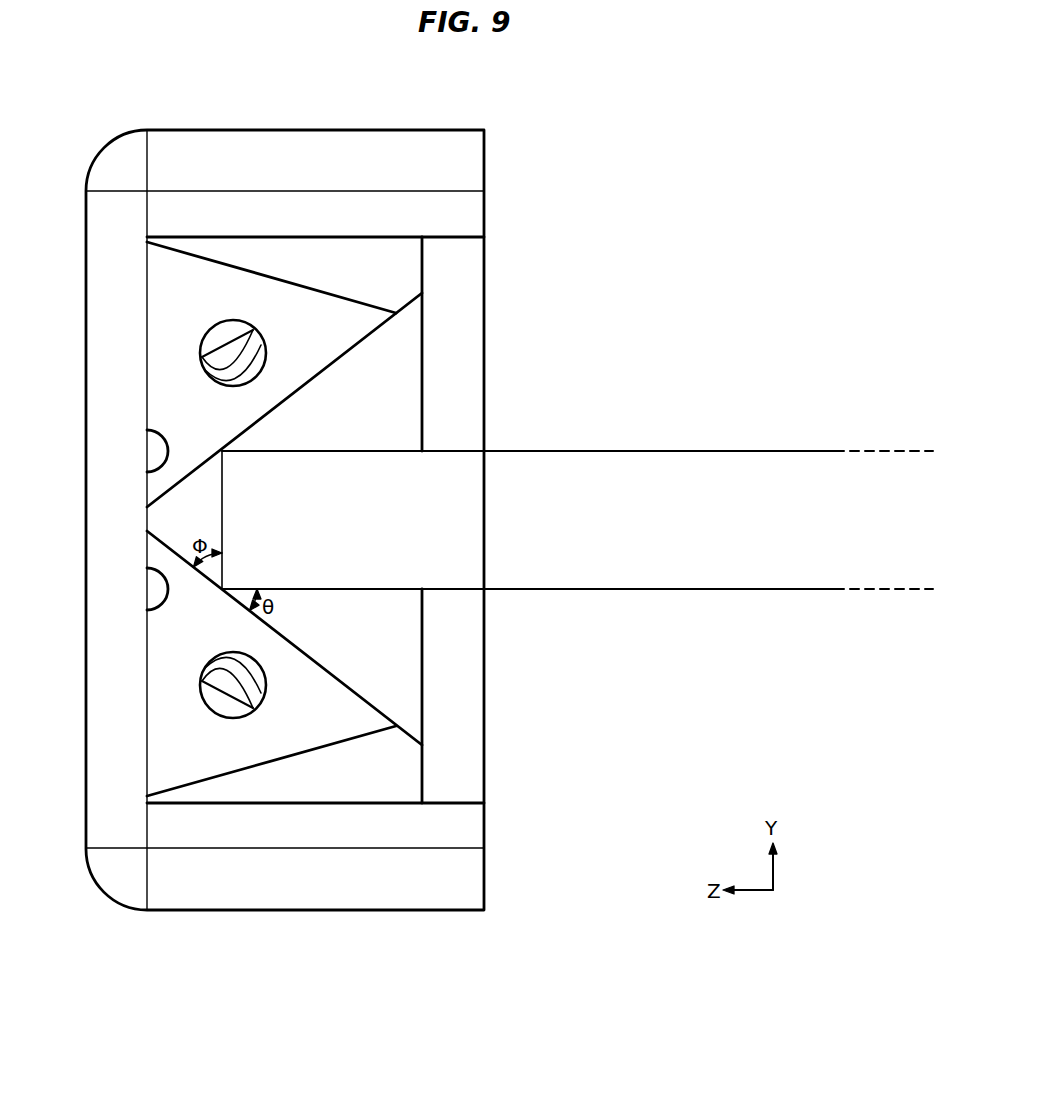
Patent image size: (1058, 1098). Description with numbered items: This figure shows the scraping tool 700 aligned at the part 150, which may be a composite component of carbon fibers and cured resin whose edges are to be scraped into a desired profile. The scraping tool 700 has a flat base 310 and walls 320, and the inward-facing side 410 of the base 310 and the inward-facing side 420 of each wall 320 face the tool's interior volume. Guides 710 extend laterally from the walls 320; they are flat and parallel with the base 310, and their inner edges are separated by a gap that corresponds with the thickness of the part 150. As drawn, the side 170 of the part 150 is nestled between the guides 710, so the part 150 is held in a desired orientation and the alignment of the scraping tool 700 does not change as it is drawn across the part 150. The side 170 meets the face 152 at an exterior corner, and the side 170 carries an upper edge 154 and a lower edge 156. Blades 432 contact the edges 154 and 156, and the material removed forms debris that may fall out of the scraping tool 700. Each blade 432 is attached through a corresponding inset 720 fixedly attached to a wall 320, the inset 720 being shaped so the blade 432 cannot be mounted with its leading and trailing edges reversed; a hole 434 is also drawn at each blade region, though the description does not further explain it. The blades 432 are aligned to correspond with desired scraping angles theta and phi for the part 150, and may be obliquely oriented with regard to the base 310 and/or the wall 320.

The part 150 is at (697, 448).
The face 152 is at (318, 446).
The upper edge 154 is at (226, 455).
The lower edge 156 is at (226, 582).
The side 170 is at (223, 507).
The base 310 is at (84, 668).
The wall 320 is at (290, 130).
The inward-facing side of base 410 is at (153, 386).
The inward-facing side of wall 420 is at (350, 238).
The blade 432 is at (357, 352).
The fastener hole 434 is at (237, 322).
The scraping tool 700 is at (578, 185).
The guide 710 is at (484, 338).
The inset 720 is at (355, 755).